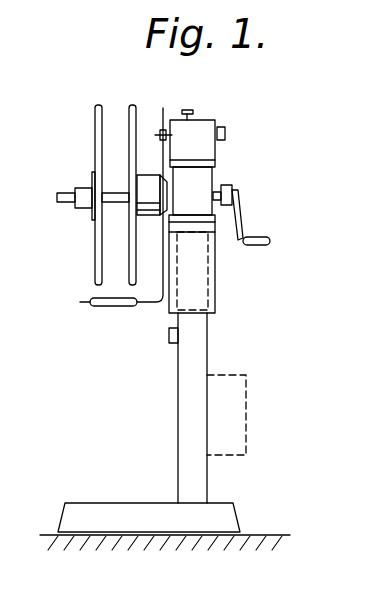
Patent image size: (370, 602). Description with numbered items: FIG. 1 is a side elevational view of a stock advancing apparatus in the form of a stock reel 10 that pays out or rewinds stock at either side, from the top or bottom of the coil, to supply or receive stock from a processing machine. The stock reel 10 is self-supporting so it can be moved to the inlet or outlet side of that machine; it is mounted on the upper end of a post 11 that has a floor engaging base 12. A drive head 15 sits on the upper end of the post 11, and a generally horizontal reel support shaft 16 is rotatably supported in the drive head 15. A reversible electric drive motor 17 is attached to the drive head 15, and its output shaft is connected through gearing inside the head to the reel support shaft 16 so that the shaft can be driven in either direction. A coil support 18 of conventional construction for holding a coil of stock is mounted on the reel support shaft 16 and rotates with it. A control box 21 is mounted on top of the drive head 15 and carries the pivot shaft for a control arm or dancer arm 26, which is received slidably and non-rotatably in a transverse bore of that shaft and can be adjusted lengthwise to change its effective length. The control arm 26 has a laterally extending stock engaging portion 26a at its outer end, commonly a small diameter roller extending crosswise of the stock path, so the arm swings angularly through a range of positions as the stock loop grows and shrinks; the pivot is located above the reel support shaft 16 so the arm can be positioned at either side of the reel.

The stock reel 10 is at (105, 173).
The post 11 is at (202, 480).
The floor engaging base 12 is at (235, 518).
The drive head 15 is at (213, 175).
The reel support shaft 16 is at (113, 198).
The reversible electric drive motor 17 is at (215, 288).
The coil support 18 is at (95, 138).
The control box 21 is at (217, 118).
The control arm 26 is at (162, 237).
The stock engaging portion 26a is at (125, 306).